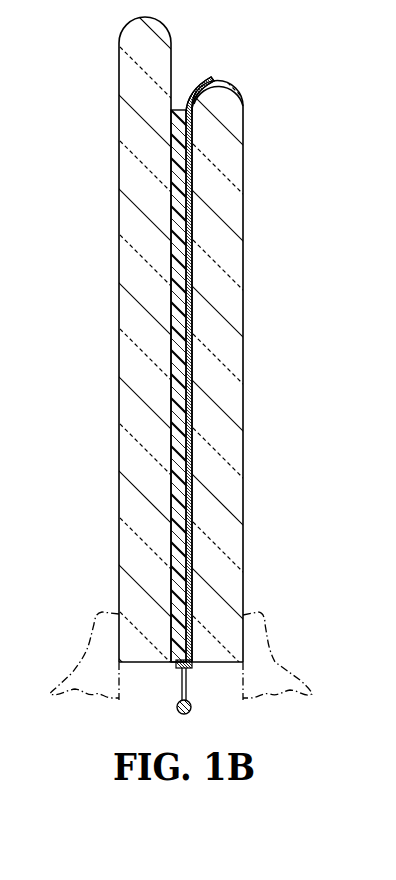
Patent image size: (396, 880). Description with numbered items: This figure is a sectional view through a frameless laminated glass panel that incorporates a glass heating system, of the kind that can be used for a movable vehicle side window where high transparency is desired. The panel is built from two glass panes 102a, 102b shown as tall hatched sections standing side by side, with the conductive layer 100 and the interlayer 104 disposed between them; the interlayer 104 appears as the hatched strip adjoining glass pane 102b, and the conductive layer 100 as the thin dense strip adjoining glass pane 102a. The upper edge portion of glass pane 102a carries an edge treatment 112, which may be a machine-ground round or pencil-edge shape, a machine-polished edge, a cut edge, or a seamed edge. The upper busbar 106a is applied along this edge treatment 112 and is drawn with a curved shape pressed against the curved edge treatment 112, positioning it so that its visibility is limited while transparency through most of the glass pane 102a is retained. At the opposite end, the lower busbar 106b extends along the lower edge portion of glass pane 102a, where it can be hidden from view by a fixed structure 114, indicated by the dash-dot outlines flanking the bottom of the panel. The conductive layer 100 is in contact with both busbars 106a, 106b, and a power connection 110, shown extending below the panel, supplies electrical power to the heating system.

The conductive layer 100 is at (179, 366).
The glass pane 102a is at (243, 366).
The glass pane 102b is at (119, 438).
The interlayer 104 is at (172, 353).
The upper busbar 106a is at (193, 82).
The lower busbar 106b is at (192, 662).
The power connection 110 is at (180, 685).
The edge treatment 112 is at (231, 82).
The fixed structure 114 is at (277, 661).